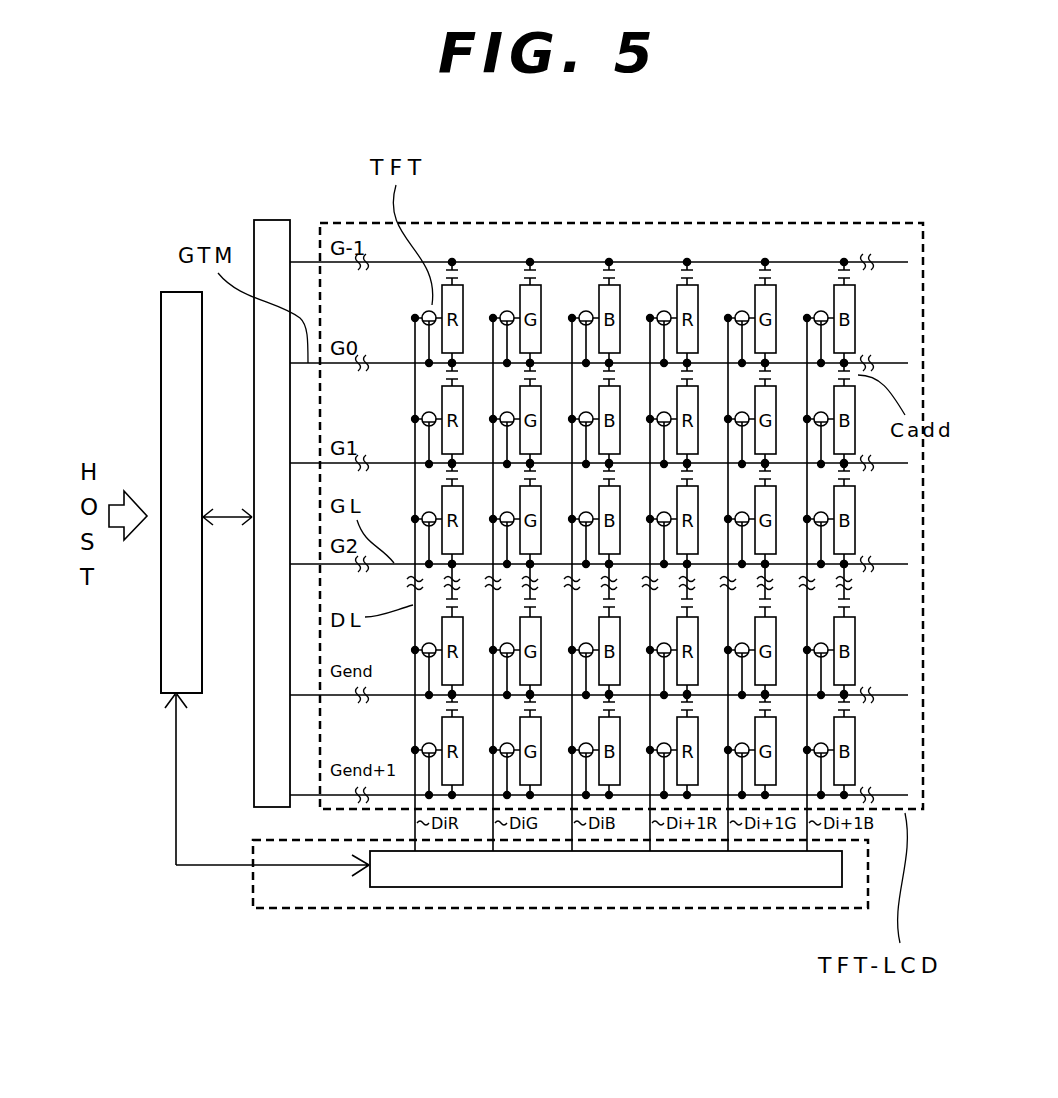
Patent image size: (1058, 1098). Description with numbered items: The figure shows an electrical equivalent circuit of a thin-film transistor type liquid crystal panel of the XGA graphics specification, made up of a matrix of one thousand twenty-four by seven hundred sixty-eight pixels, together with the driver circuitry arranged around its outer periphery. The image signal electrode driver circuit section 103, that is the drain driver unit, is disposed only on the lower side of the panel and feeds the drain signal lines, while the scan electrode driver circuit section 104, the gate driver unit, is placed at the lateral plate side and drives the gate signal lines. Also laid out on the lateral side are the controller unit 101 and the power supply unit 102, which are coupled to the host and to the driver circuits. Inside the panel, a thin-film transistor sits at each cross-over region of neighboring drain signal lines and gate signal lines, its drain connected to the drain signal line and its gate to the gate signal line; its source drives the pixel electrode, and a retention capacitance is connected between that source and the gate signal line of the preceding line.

The controller unit 101 is at (161, 592).
The power supply unit 102 is at (162, 371).
The image signal electrode driver circuit section 103 is at (393, 912).
The scan electrode driver circuit section 104 is at (254, 760).